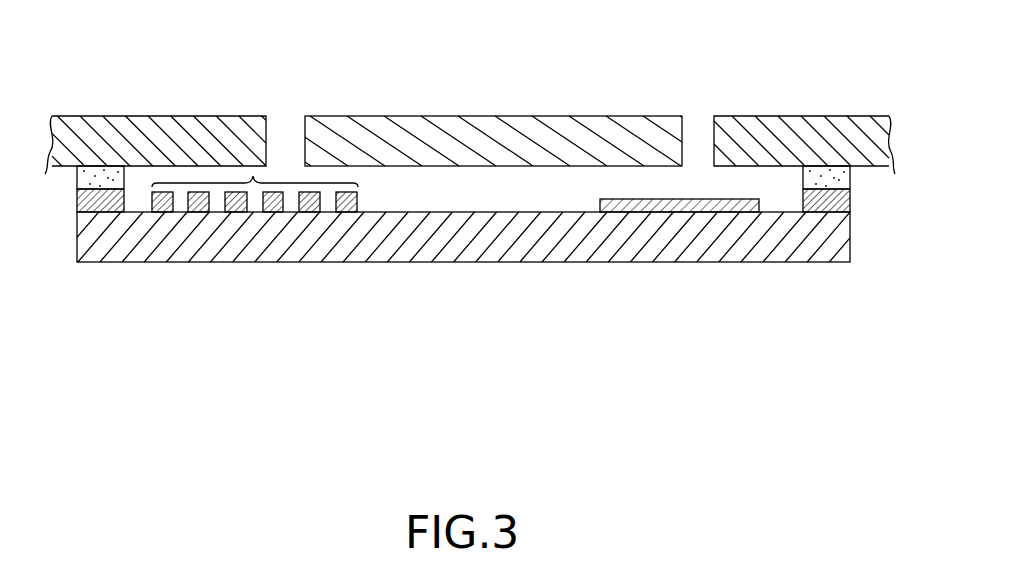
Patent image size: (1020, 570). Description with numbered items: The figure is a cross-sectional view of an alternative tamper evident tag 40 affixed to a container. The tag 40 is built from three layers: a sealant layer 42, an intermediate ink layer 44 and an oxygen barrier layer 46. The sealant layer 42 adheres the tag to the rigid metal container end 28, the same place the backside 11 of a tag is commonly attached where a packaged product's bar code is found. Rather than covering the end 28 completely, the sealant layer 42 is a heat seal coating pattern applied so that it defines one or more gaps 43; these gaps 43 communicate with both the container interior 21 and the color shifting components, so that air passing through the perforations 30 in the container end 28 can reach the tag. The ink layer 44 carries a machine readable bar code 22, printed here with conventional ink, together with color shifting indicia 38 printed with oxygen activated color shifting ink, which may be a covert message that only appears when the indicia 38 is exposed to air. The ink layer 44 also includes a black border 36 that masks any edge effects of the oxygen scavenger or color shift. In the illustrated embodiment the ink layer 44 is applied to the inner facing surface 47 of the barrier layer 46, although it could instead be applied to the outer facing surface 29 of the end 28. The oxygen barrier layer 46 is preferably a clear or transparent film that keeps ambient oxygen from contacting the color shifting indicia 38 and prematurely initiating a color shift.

The backside 11 is at (99, 166).
The container interior 21 is at (482, 90).
The bar code 22 is at (253, 176).
The container end 28 is at (805, 112).
The outer facing surface 29 is at (412, 168).
The perforations 30 is at (285, 112).
The black border 36 is at (77, 205).
The color shifting indicia 38 is at (728, 199).
The tamper evident tag 40 is at (127, 289).
The sealant layer 42 is at (853, 177).
The gaps 43 is at (508, 189).
The ink layer 44 is at (853, 200).
The oxygen barrier layer 46 is at (853, 247).
The inner facing surface 47 is at (553, 212).